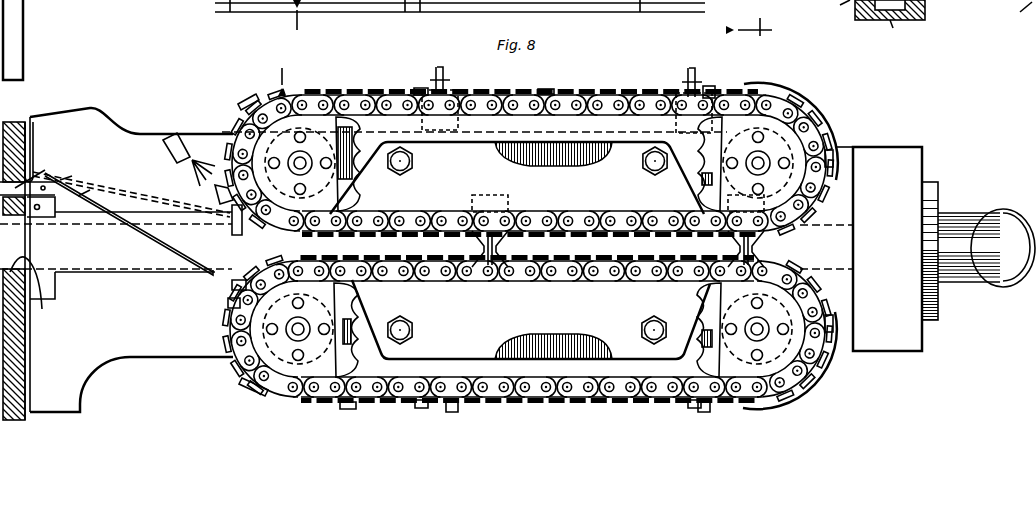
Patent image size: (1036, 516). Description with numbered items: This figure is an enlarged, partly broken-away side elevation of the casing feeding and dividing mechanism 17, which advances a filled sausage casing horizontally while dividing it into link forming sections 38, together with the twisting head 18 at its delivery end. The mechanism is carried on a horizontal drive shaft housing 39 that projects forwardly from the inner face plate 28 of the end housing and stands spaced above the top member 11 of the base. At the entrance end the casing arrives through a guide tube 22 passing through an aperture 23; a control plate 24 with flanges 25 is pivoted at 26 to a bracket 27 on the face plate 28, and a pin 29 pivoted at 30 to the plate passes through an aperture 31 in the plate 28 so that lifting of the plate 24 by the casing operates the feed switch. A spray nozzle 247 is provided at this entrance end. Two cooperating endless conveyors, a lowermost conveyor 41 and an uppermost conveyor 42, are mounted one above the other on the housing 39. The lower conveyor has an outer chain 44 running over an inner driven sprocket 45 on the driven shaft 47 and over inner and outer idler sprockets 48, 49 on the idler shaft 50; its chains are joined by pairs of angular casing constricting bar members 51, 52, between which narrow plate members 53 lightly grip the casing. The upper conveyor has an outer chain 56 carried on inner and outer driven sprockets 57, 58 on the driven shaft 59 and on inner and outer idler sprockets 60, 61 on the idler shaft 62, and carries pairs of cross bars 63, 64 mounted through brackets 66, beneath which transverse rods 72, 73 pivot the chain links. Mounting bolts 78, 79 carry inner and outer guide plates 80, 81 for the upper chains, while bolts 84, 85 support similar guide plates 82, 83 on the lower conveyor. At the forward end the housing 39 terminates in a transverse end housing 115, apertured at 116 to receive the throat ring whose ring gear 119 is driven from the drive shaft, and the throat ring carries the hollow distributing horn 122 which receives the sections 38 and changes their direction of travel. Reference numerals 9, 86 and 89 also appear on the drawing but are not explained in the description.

The section arrow 9 is at (756, 32).
The top member 11 is at (1022, 17).
The casing feeding and dividing mechanism 17 is at (293, 48).
The twisting head 18 is at (950, 292).
The guide tube 22 is at (83, 273).
The aperture 23 is at (36, 268).
The plate 24 is at (140, 228).
The flanges 25 is at (90, 210).
The pivot 26 is at (70, 195).
The bracket 27 is at (48, 214).
The inner face plate 28 is at (24, 32).
The pin 29 is at (18, 186).
The pivotal connection 30 is at (55, 172).
The aperture 31 is at (32, 135).
The link forming sections 38 is at (651, 231).
The drive shaft housing 39 is at (135, 142).
The lowermost conveyor 41 is at (230, 381).
The uppermost conveyor 42 is at (248, 116).
The outer endless chain 44 is at (350, 409).
The inner driven sprocket 45 is at (692, 322).
The driven shaft 47 is at (802, 354).
The inner idler sprocket 48 is at (352, 318).
The outer idler sprocket 49 is at (262, 388).
The idler shaft 50 is at (298, 330).
The casing constricting bar member 51 is at (232, 303).
The casing constricting bar member 52 is at (236, 283).
The plate members 53 is at (607, 407).
The outer endless chain 56 is at (592, 104).
The inner driven sprocket 57 is at (700, 170).
The outer driven sprocket 58 is at (757, 120).
The driven shaft 59 is at (764, 158).
The inner idler sprocket 60 is at (354, 166).
The outer idler sprocket 61 is at (324, 128).
The idler shaft 62 is at (300, 160).
The casing constricting cross bar 63 is at (422, 90).
The casing constricting cross bar 64 is at (450, 88).
The bracket 66 is at (556, 14).
The transverse rod 72 is at (713, 98).
The transverse rod 73 is at (680, 97).
The mounting bolt 78 is at (648, 170).
The mounting bolt 79 is at (405, 170).
The inner guide plate 80 is at (563, 162).
The outer guide plate 81 is at (517, 178).
The inner guide plate 82 is at (545, 344).
The outer guide plate 83 is at (531, 319).
The mounting bolt 84 is at (655, 318).
The mounting bolt 85 is at (408, 322).
The chain cleat 86 is at (582, 90).
The link 89 is at (426, 14).
The end housing 115 is at (903, 158).
The aperture 116 is at (893, 15).
The ring gear 119 is at (893, 33).
The distributing horn 122 is at (982, 224).
The spray nozzle 247 is at (173, 134).